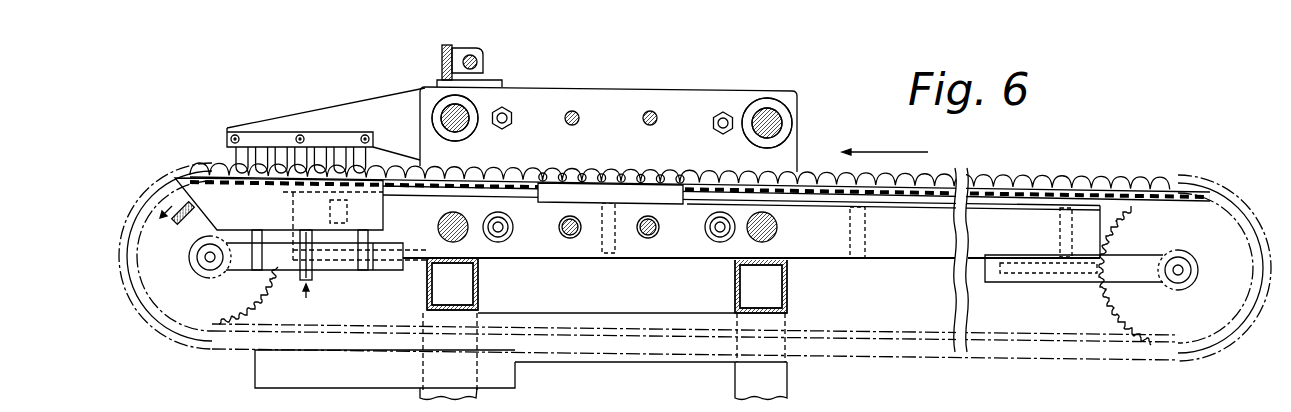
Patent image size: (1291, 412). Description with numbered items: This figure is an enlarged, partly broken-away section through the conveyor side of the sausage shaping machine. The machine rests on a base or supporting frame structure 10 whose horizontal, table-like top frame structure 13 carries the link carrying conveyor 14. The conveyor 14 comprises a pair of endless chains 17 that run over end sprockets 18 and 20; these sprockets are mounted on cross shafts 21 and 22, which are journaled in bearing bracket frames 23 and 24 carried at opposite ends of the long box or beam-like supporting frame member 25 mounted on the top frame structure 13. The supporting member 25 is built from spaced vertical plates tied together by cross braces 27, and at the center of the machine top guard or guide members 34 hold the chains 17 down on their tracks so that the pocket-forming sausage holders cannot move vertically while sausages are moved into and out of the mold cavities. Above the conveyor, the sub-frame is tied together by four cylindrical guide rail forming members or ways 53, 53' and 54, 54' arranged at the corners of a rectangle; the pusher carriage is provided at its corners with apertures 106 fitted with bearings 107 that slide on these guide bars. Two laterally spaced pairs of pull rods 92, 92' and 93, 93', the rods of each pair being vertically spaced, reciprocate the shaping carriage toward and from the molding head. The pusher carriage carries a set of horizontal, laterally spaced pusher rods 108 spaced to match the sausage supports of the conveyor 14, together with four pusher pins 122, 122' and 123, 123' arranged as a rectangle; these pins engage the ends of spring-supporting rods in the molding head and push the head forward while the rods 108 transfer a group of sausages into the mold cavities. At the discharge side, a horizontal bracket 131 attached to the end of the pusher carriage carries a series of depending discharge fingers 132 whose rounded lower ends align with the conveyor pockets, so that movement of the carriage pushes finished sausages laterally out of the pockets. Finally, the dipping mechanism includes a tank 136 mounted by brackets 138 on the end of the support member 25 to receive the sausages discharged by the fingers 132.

The base or supporting frame structure 10 is at (725, 376).
The top frame structure 13 is at (782, 292).
The link carrying conveyor 14 is at (1044, 368).
The endless chains 17 is at (1142, 194).
The end sprocket 18 is at (1178, 331).
The end sprocket 20 is at (178, 318).
The cross shaft 21 is at (1184, 262).
The cross shaft 22 is at (207, 259).
The bearing bracket frame 23 is at (1050, 278).
The bearing bracket frame 24 is at (238, 263).
The supporting frame member 25 is at (890, 251).
The cross braces 27 is at (866, 231).
The top guard or guide members 34 is at (571, 194).
The guide rail forming member 53 is at (477, 100).
The guide rail forming member 53' is at (453, 251).
The guide rail forming member 54 is at (785, 121).
The guide rail forming member 54' is at (787, 227).
The pull rod 92 is at (559, 129).
The pull rod 92' is at (570, 250).
The pull rod 93 is at (635, 114).
The pull rod 93' is at (648, 250).
The apertures 106 is at (462, 128).
The bearings 107 is at (473, 127).
The pusher rods 108 is at (618, 173).
The pusher pin 122 is at (521, 116).
The pusher pin 122' is at (506, 247).
The pusher pin 123 is at (713, 102).
The pusher pin 123' is at (710, 252).
The bracket 131 is at (346, 118).
The discharge fingers 132 is at (224, 150).
The tank 136 is at (215, 215).
The brackets 138 is at (270, 256).